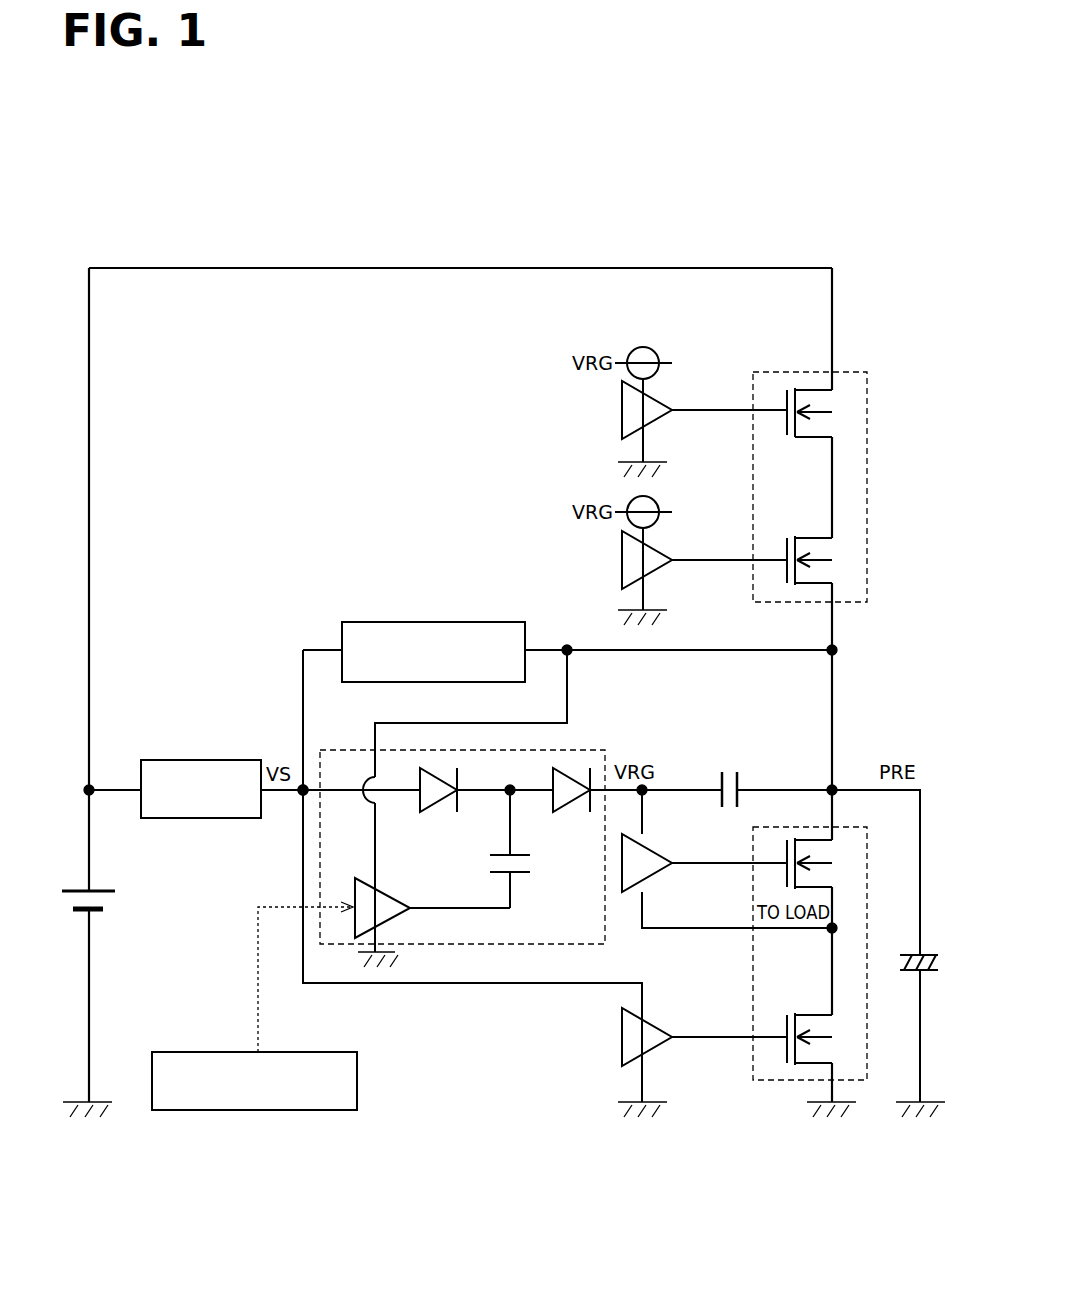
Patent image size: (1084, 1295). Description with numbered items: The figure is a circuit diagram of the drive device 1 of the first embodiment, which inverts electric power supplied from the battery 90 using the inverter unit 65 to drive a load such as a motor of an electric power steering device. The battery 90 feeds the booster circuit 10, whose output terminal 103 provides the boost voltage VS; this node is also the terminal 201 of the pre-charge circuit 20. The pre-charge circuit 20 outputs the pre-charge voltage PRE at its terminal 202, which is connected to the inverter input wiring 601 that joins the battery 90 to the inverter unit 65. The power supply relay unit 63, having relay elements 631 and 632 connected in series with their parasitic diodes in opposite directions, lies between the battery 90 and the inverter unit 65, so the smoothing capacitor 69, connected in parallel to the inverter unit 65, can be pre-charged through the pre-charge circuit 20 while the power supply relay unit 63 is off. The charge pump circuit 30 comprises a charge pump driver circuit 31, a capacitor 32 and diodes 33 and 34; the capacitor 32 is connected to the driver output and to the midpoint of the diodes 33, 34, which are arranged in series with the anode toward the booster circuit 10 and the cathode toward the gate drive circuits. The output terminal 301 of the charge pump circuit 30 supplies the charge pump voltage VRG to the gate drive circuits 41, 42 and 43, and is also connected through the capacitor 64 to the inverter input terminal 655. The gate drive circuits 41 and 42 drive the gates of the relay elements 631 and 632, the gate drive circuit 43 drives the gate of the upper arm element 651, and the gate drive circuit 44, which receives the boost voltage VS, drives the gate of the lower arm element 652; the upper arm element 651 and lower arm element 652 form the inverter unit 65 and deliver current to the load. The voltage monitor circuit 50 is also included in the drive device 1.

The drive device 1 is at (152, 1180).
The booster circuit 10 is at (172, 760).
The pre-charge circuit 20 is at (378, 622).
The charge pump circuit 30 is at (480, 836).
The charge pump driver circuit 31 is at (394, 893).
The capacitor 32 is at (522, 876).
The diode 33 is at (446, 812).
The diode 34 is at (576, 812).
The gate drive circuit 41 is at (622, 408).
The gate drive circuit 42 is at (622, 558).
The gate drive circuit 43 is at (624, 893).
The gate drive circuit 44 is at (622, 1035).
The voltage monitor circuit 50 is at (357, 1068).
The power supply relay unit 63 is at (847, 466).
The capacitor 64 is at (740, 772).
The inverter unit 65 is at (810, 951).
The smoothing capacitor 69 is at (930, 953).
The battery 90 is at (70, 888).
The output terminal 103 is at (299, 794).
The terminal 201 is at (303, 790).
The terminal 202 is at (567, 646).
The output terminal 301 is at (646, 787).
The inverter input wiring 601 is at (834, 678).
The relay element 631 is at (806, 390).
The relay element 632 is at (806, 538).
The upper arm element 651 is at (810, 840).
The lower arm element 652 is at (806, 1015).
The inverter input terminal 655 is at (835, 787).